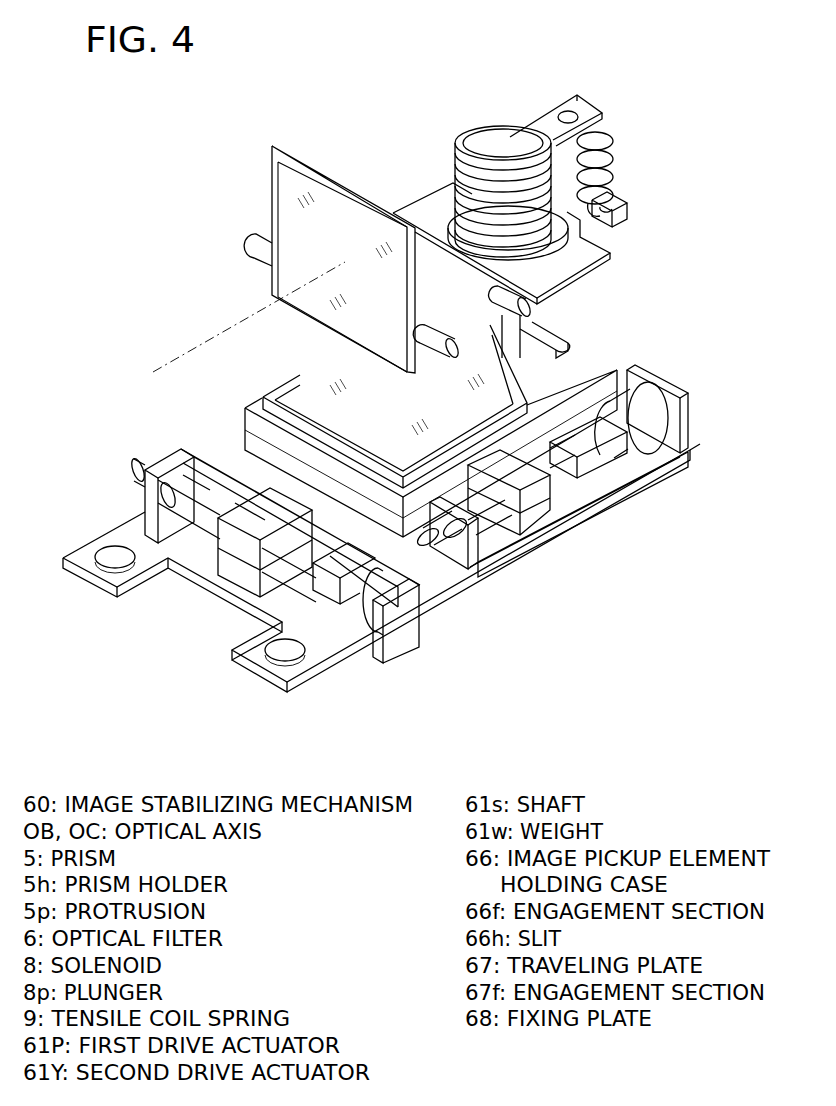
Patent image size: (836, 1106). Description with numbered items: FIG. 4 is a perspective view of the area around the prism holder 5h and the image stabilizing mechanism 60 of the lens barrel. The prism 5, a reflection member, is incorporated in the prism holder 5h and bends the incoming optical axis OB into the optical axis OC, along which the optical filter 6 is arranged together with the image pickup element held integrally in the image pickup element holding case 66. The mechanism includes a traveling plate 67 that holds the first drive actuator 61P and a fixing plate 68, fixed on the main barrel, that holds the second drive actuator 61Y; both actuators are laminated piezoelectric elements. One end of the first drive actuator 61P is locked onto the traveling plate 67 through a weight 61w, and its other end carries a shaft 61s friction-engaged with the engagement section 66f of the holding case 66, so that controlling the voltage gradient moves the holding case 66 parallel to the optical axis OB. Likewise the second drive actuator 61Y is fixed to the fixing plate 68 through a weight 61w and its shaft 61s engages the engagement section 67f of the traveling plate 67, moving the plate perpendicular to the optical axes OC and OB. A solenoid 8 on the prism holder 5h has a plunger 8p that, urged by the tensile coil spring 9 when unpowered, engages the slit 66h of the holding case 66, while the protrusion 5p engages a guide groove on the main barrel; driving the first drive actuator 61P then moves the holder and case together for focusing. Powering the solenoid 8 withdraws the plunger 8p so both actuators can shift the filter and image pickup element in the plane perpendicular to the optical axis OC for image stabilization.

The image stabilizing mechanism 60 is at (590, 562).
The optical axis OB is at (173, 362).
The optical axis OC is at (387, 388).
The prism 5 is at (290, 273).
The prism holder 5h is at (492, 282).
The protrusion 5p is at (496, 300).
The optical filter 6 is at (303, 385).
The solenoid 8 is at (463, 185).
The plunger 8p is at (517, 138).
The tensile coil spring 9 is at (612, 158).
The first drive actuator 61P is at (603, 455).
The second drive actuator 61Y is at (337, 600).
The shaft 61s is at (198, 508).
The weight 61w is at (640, 400).
The image pickup element holding case 66 is at (560, 342).
The engagement section 66f is at (522, 478).
The slit 66h is at (543, 362).
The traveling plate 67 is at (672, 408).
The engagement section 67f is at (220, 522).
The fixing plate 68 is at (278, 608).